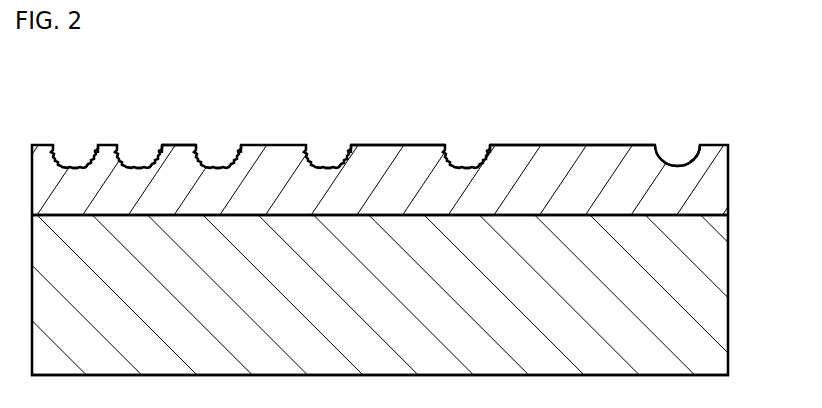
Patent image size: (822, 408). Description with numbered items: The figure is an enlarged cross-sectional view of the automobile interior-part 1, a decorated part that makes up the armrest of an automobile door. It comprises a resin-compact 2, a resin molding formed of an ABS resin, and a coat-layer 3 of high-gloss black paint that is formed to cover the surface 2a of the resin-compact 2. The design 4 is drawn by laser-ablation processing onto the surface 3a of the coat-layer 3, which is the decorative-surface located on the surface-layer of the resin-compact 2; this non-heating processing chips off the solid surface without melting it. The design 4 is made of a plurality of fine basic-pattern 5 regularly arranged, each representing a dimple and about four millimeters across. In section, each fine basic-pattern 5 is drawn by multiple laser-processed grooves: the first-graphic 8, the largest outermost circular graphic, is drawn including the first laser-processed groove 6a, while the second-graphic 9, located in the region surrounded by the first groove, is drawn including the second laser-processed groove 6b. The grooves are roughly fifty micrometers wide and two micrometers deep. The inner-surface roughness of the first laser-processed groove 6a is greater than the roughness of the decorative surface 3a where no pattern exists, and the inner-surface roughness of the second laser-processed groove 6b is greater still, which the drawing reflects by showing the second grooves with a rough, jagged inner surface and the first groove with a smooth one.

The automobile interior-part 1 is at (720, 135).
The resin-compact 2 is at (728, 257).
The surface of the resin-compact 2a is at (563, 213).
The coat-layer 3 is at (722, 192).
The surface of the coat-layer 3a is at (585, 143).
The design 4 is at (160, 135).
The fine basic-pattern 5 is at (393, 123).
The first laser-processed groove 6a is at (693, 160).
The second laser-processed groove 6b is at (120, 147).
The first-graphic 8 is at (665, 158).
The second-graphic 9 is at (62, 152).